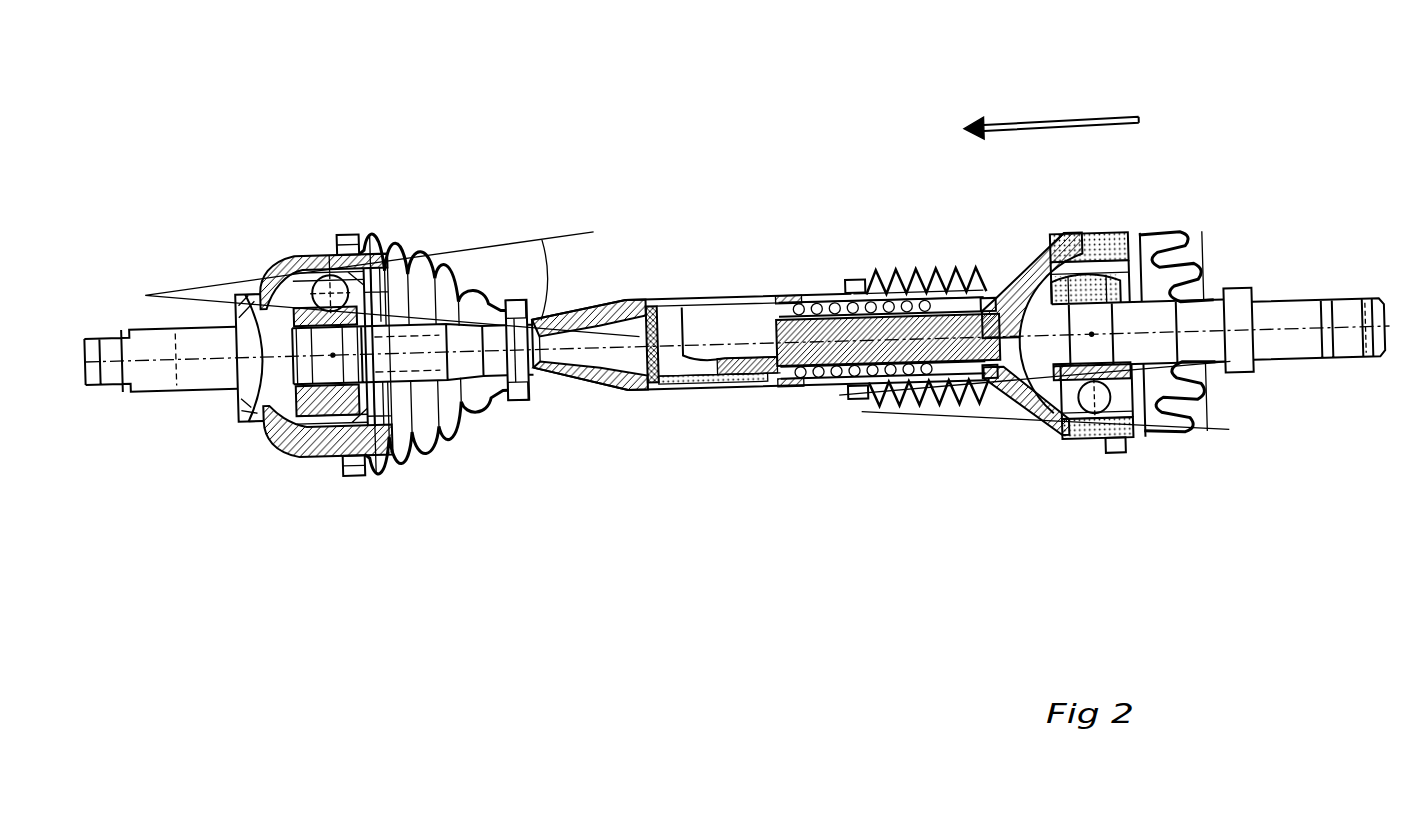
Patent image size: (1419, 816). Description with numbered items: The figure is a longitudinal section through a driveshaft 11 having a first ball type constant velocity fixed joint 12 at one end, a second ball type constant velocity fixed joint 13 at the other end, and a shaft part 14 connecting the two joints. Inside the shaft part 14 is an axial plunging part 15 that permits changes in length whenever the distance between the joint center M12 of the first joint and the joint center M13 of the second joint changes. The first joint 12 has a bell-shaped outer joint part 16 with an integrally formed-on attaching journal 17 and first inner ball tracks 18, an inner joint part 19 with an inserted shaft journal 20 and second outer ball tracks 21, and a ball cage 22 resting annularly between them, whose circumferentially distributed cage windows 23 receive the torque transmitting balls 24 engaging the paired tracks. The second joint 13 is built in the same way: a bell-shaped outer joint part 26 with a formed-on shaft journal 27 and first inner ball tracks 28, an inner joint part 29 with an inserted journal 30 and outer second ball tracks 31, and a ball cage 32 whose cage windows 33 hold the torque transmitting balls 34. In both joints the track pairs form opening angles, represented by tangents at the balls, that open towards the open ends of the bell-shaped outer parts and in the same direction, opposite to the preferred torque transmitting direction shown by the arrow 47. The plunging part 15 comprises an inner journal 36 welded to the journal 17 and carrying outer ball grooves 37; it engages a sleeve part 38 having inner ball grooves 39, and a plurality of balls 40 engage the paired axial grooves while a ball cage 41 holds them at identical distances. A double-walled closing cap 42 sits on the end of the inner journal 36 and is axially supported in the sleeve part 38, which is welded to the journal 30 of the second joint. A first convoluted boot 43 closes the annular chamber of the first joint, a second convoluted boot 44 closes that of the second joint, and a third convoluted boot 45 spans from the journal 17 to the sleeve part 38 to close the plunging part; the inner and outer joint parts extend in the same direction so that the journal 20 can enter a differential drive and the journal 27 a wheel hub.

The driveshaft 11 is at (736, 295).
The first ball type constant velocity fixed joint 12 is at (1044, 307).
The second ball type constant velocity fixed joint 13 is at (392, 321).
The shaft part 14 is at (756, 264).
The axial plunging part 15 is at (839, 288).
The bell-shaped outer joint part 16 is at (1097, 275).
The attaching journal 17 is at (995, 320).
The first inner ball tracks 18 is at (1128, 449).
The inner joint part 19 is at (1077, 310).
The shaft journal 20 is at (1275, 341).
The second outer ball tracks 21 is at (1060, 430).
The ball cage 22 is at (1110, 291).
The cage windows 23 is at (1082, 430).
The torque transmitting balls 24 is at (1095, 434).
The bell-shaped outer joint part 26 is at (335, 392).
The shaft journal 27 is at (165, 377).
The first inner ball tracks 28 is at (388, 270).
The inner joint part 29 is at (345, 407).
The journal 30 is at (395, 394).
The outer second ball tracks 31 is at (300, 286).
The ball cage 32 is at (265, 435).
The cage windows 33 is at (320, 271).
The torque transmitting balls 34 is at (348, 262).
The inner journal 36 is at (930, 293).
The outer ball grooves 37 is at (895, 292).
The sleeve part 38 is at (775, 319).
The inner ball grooves 39 is at (791, 319).
The balls 40 is at (870, 302).
The ball cage 41 is at (852, 301).
The double-walled closing cap 42 is at (705, 303).
The first convoluted boot 43 is at (1210, 306).
The second convoluted boot 44 is at (438, 380).
The third convoluted boot 45 is at (945, 294).
The arrow 47 is at (1078, 146).
The joint center M13 is at (333, 362).
The joint center M12 is at (1150, 270).